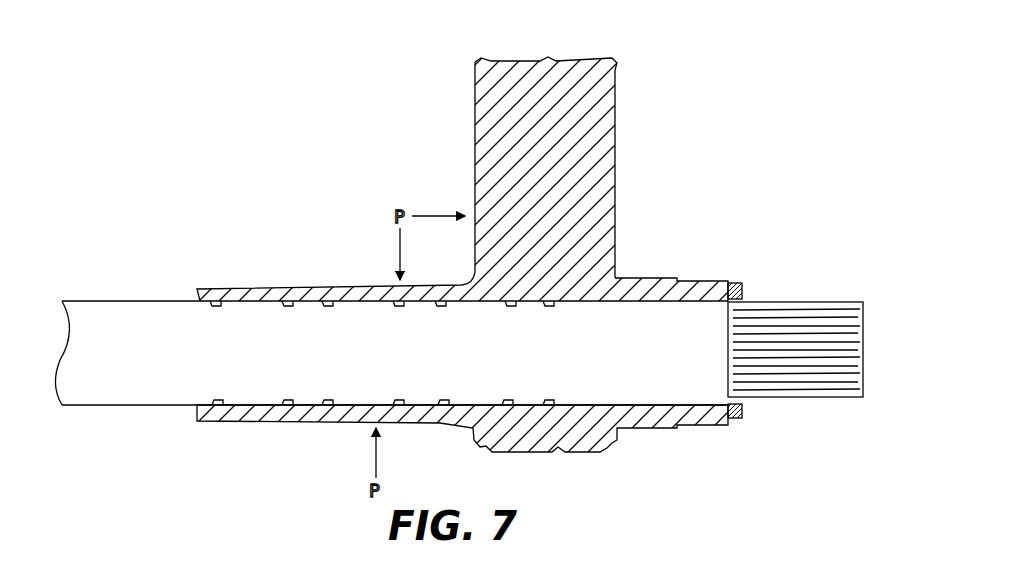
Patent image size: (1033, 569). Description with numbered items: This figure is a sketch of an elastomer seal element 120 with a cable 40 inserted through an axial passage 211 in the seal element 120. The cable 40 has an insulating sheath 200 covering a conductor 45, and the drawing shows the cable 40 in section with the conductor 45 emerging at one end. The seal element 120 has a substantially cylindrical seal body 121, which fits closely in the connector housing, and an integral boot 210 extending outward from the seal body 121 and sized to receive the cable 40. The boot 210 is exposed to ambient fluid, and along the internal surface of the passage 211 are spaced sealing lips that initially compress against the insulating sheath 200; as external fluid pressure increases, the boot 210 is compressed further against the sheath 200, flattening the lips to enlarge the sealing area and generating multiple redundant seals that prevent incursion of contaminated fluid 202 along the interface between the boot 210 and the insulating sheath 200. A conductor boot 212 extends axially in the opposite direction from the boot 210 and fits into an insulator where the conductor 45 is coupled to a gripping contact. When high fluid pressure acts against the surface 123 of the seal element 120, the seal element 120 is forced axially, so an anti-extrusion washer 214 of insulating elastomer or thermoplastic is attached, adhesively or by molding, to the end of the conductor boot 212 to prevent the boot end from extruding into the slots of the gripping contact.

The cable 40 is at (386, 349).
The conductor 45 is at (795, 398).
The seal element 120 is at (508, 235).
The seal body 121 is at (564, 167).
The surface 123 is at (475, 167).
The insulating sheath 200 is at (391, 322).
The contaminated fluid 202 is at (183, 298).
The boot 210 is at (462, 306).
The axial passage 211 is at (277, 289).
The conductor boot 212 is at (705, 280).
The anti-extrusion washer 214 is at (740, 282).